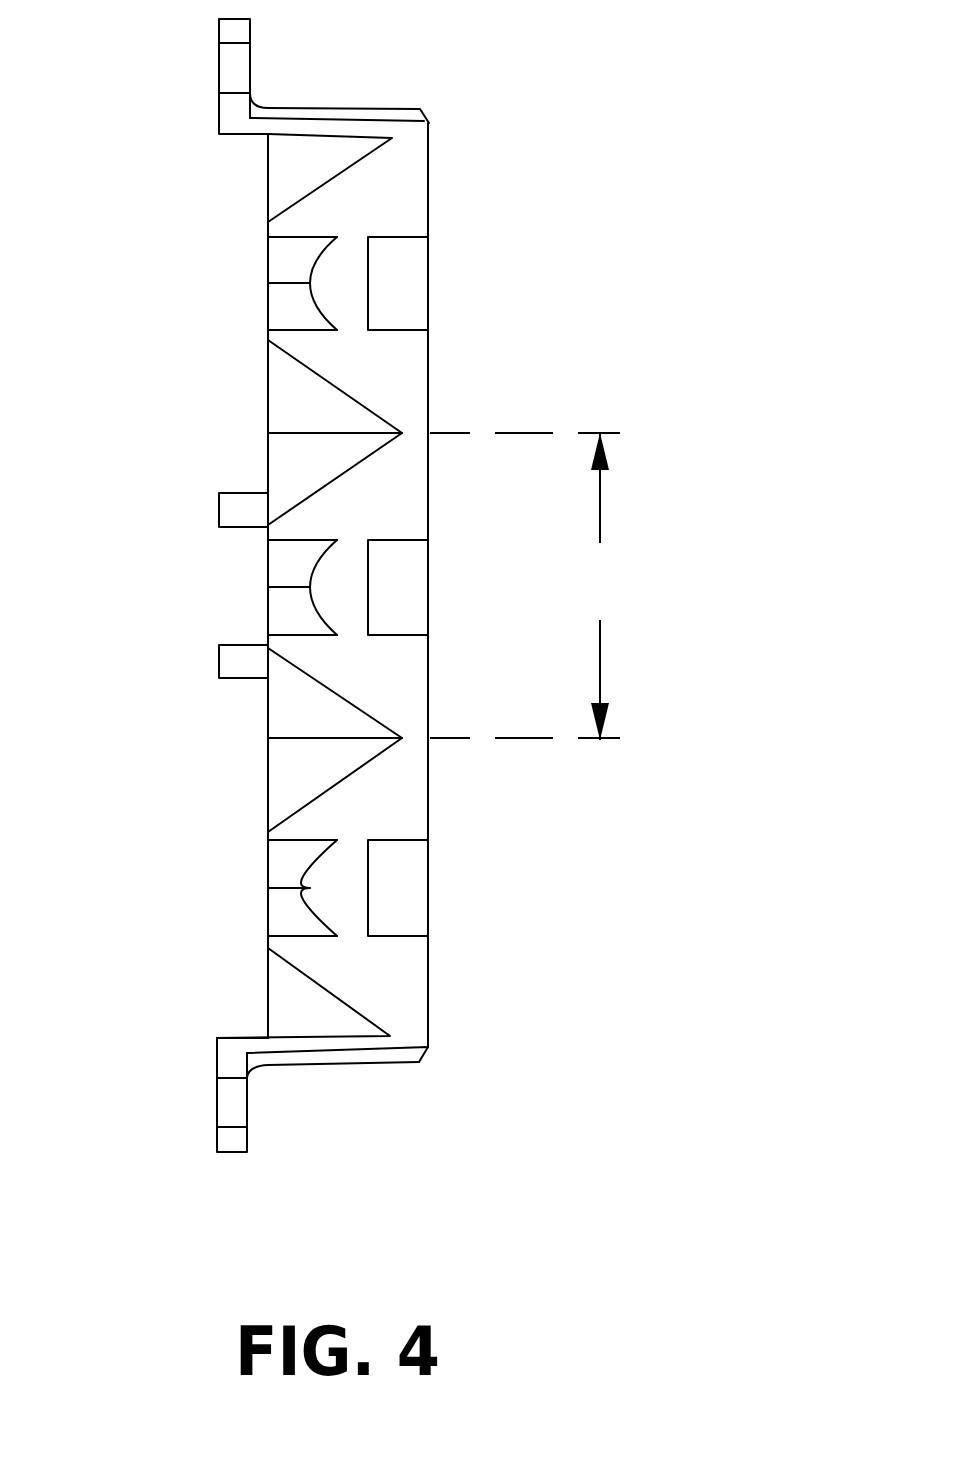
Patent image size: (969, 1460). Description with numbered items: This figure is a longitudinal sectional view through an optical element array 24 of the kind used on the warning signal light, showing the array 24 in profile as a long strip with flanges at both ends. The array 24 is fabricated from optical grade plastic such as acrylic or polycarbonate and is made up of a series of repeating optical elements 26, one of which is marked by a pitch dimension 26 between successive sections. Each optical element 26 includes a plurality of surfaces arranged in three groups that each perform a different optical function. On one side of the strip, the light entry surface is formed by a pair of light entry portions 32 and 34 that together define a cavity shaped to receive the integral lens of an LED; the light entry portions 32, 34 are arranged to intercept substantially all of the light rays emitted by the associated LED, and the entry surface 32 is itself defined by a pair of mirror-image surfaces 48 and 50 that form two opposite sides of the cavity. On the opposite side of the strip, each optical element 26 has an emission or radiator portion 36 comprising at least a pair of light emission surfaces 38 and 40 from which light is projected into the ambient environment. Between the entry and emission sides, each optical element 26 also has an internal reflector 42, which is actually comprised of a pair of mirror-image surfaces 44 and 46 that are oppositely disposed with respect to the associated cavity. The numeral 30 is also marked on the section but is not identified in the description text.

The optical element array 24 is at (483, 93).
The optical element 26 is at (529, 586).
The base wall 30 is at (267, 165).
The light entry portion 32 is at (252, 237).
The light entry portion 34 is at (310, 585).
The emission or radiator portion 36 is at (440, 127).
The light emission surface 38 is at (428, 470).
The light emission surface 40 is at (367, 575).
The internal reflector 42 is at (322, 183).
The reflector surface 44 is at (308, 492).
The reflector surface 46 is at (323, 692).
The light entry surface 48 is at (295, 843).
The light entry surface 50 is at (302, 936).